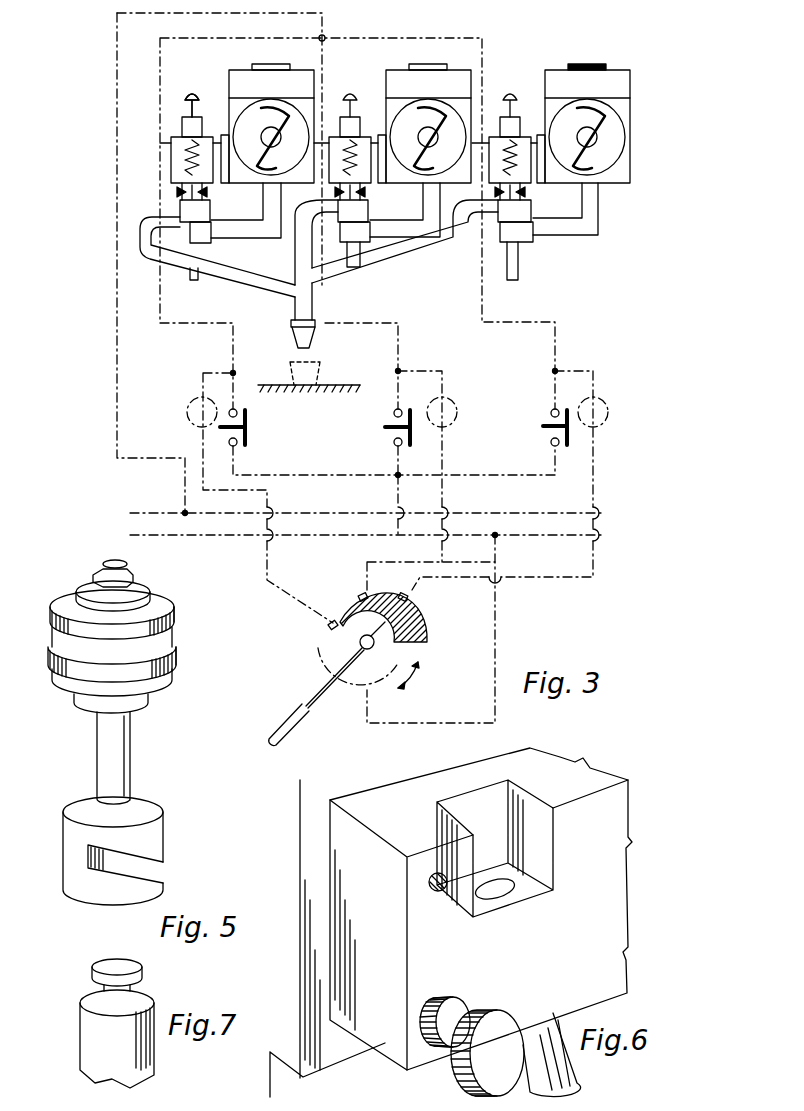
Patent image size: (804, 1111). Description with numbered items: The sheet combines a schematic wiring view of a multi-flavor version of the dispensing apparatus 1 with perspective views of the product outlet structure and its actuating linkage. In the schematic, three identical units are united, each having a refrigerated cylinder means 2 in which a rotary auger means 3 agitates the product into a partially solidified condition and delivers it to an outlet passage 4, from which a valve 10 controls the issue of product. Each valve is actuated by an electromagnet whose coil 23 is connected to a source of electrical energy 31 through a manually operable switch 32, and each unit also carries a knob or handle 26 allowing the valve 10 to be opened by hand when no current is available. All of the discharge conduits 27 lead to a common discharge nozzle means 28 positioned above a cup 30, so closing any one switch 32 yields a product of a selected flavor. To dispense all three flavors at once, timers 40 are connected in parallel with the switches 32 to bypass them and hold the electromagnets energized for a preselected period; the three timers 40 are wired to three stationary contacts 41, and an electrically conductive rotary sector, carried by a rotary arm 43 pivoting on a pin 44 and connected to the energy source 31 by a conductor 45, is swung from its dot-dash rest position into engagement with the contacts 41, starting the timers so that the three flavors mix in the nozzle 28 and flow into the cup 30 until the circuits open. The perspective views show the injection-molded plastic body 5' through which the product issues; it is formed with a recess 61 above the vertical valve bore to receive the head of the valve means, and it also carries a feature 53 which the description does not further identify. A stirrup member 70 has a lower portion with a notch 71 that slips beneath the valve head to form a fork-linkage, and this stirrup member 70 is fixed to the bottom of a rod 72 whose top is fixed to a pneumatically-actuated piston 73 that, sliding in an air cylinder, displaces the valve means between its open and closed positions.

In FIG. 3, the dispensing apparatus 1 is at (281, 62).
In FIG. 3, the refrigerated cylinder means 2 is at (243, 112).
In FIG. 3, the rotary auger means 3 is at (283, 130).
In FIG. 3, the outlet passage 4 is at (270, 236).
In FIG. 3, the valve 10 is at (196, 215).
In FIG. 3, the electromagnet coil 23 is at (170, 148).
In FIG. 3, the knob or handle 26 is at (193, 94).
In FIG. 3, the discharge conduits 27 is at (237, 276).
In FIG. 3, the discharge nozzle means 28 is at (314, 333).
In FIG. 3, the cup 30 is at (298, 374).
In FIG. 3, the source of electrical energy 31 is at (542, 530).
In FIG. 3, the manually operable switch 32 is at (250, 427).
In FIG. 3, the timers 40 is at (188, 413).
In FIG. 3, the stationary contacts 41 is at (332, 623).
In FIG. 3, the rotary arm 43 is at (315, 698).
In FIG. 3, the pin 44 is at (355, 643).
In FIG. 3, the conductor 45 is at (498, 623).
In FIG. 5, the stirrup member 70 is at (97, 895).
In FIG. 5, the notch 71 is at (153, 883).
In FIG. 5, the rod 72 is at (131, 763).
In FIG. 5, the pneumatically-actuated piston 73 is at (170, 650).
In FIG. 6, the molded plastic body 5' is at (452, 911).
In FIG. 6, the bore 53 is at (437, 893).
In FIG. 6, the recess 61 is at (498, 795).